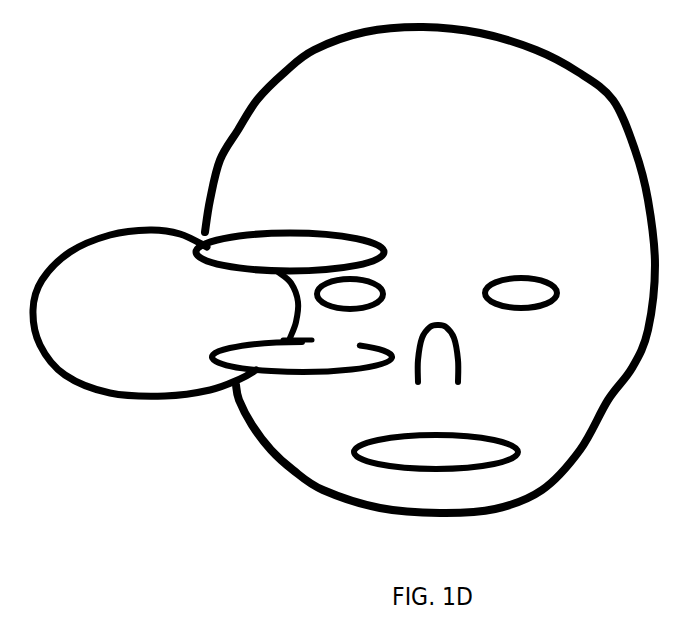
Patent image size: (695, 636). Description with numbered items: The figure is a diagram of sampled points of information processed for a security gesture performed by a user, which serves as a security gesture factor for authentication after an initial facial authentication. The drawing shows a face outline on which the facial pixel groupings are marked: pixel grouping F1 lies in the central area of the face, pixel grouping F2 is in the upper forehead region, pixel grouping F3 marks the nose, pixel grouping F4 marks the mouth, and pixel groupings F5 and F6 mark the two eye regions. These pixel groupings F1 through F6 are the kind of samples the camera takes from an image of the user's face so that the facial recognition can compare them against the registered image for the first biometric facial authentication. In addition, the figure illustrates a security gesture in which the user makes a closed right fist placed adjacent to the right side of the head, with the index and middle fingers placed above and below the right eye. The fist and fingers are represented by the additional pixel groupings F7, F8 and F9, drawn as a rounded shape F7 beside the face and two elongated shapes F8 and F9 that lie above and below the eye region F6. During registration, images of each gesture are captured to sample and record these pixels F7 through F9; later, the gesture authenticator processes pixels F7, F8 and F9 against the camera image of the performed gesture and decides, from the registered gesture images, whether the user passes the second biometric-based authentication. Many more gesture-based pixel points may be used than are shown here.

The pixel grouping F1 is at (430, 270).
The pixel grouping F2 is at (438, 74).
The pixel grouping F3 is at (438, 368).
The pixel grouping F4 is at (436, 467).
The pixel grouping F5 is at (533, 310).
The pixel grouping F6 is at (350, 310).
The additional pixel grouping F7 is at (165, 313).
The additional pixel grouping F8 is at (290, 230).
The additional pixel grouping F9 is at (302, 376).